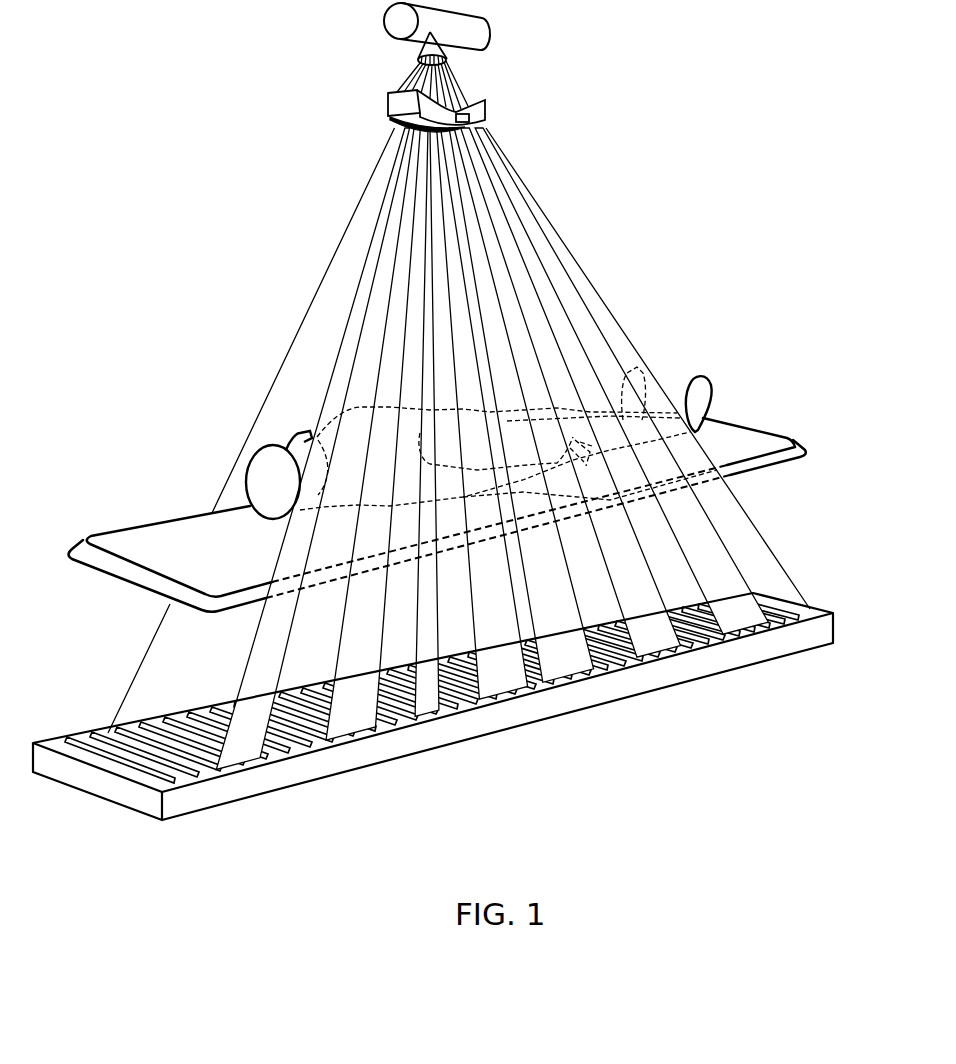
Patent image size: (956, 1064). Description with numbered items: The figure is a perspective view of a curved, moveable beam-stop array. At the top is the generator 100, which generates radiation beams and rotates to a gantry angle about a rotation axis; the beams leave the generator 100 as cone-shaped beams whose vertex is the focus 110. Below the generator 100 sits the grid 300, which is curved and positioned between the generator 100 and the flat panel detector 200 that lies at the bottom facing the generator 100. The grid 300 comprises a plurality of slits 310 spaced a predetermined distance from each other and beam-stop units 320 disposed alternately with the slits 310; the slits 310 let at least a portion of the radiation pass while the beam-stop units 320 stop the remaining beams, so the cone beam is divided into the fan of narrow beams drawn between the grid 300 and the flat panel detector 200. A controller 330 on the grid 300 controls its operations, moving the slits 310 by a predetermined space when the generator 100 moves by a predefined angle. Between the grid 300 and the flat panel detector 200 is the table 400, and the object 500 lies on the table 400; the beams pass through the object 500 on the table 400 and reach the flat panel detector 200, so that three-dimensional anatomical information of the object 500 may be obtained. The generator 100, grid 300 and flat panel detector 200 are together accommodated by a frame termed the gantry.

The generator 100 is at (483, 28).
The focus 110 is at (443, 41).
The flat panel detector 200 is at (75, 737).
The grid 300 is at (447, 134).
The slits 310 is at (402, 130).
The beam-stop units 320 is at (404, 130).
The controller 330 is at (470, 118).
The table 400 is at (136, 533).
The object 500 is at (298, 460).